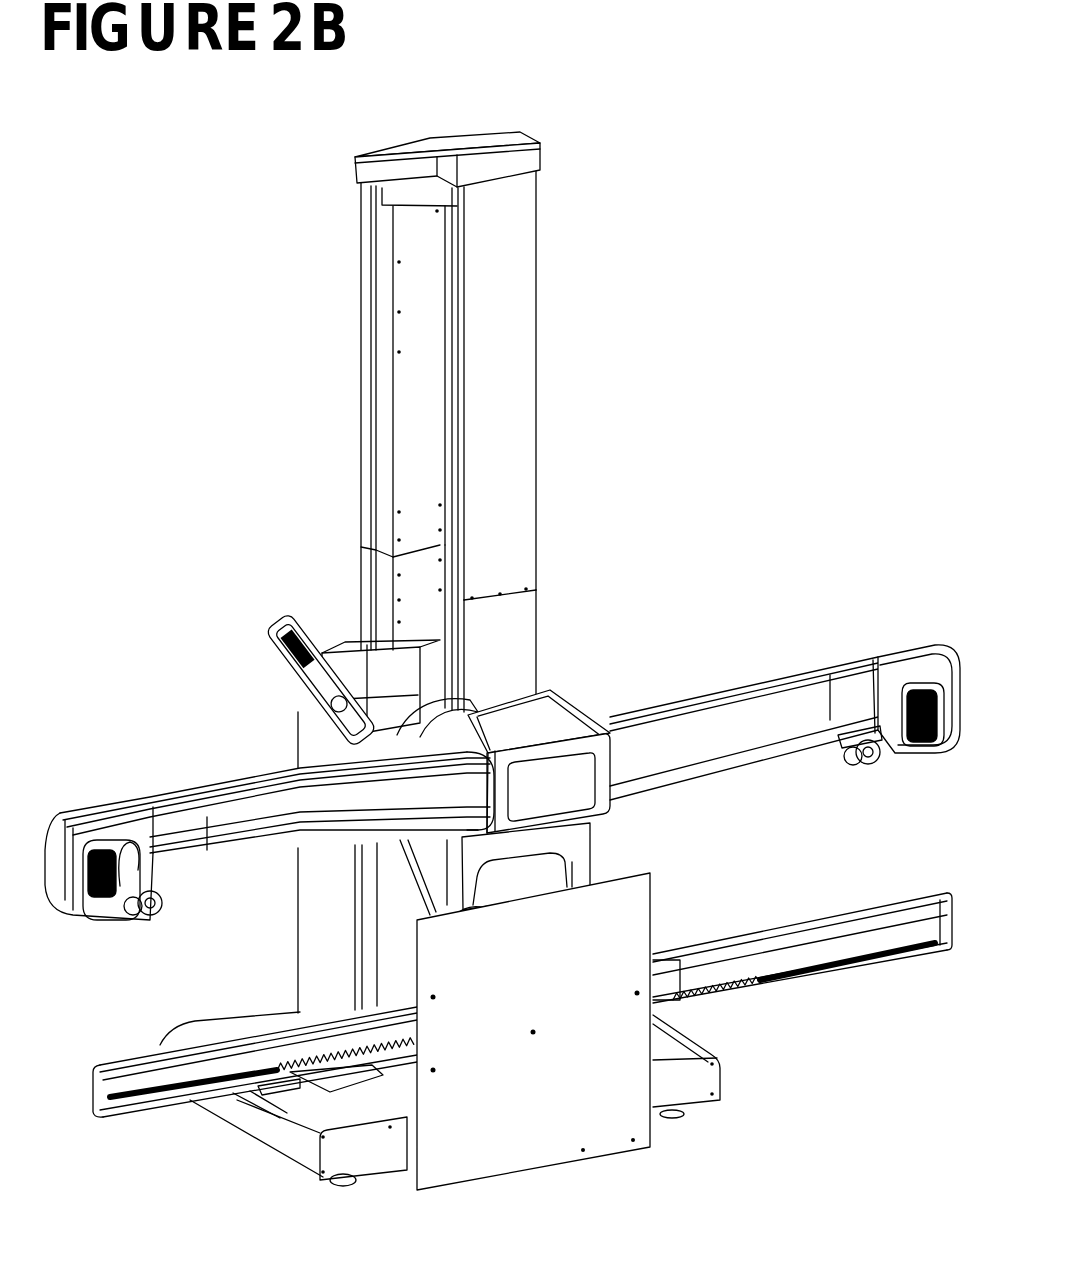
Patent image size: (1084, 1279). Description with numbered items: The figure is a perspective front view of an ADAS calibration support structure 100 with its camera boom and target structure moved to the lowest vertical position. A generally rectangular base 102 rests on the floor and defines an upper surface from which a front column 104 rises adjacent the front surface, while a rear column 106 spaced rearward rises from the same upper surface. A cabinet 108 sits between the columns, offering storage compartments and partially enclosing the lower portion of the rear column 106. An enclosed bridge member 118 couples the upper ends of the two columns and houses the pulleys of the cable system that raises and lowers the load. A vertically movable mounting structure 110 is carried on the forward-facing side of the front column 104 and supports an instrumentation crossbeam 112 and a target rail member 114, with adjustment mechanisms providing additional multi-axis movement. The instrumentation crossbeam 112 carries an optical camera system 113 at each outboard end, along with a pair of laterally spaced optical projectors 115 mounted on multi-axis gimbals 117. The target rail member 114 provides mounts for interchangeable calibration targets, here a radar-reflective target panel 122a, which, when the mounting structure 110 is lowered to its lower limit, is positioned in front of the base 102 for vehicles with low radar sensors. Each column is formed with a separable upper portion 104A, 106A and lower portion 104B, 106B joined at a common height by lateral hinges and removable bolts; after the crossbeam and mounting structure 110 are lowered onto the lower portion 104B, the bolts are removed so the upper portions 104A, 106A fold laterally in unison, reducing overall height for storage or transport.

The ADAS calibration support structure 100 is at (502, 620).
The base 102 is at (522, 1027).
The front column 104 is at (597, 441).
The upper portion of the front column 104A is at (580, 385).
The lower portion of the front column 104B is at (581, 628).
The rear column 106 is at (329, 438).
The upper portion of the rear column 106A is at (348, 372).
The lower portion of the rear column 106B is at (342, 617).
The cabinet 108 is at (328, 862).
The mounting structure 110 is at (711, 756).
The instrumentation crossbeam 112 is at (269, 805).
The optical camera system 113 is at (498, 834).
The target rail member 114 is at (522, 992).
The optical projector 115 is at (499, 827).
The multi-axis gimbal 117 is at (807, 755).
The bridge member 118 is at (411, 134).
The radar-reflective target panel 122a is at (587, 1048).